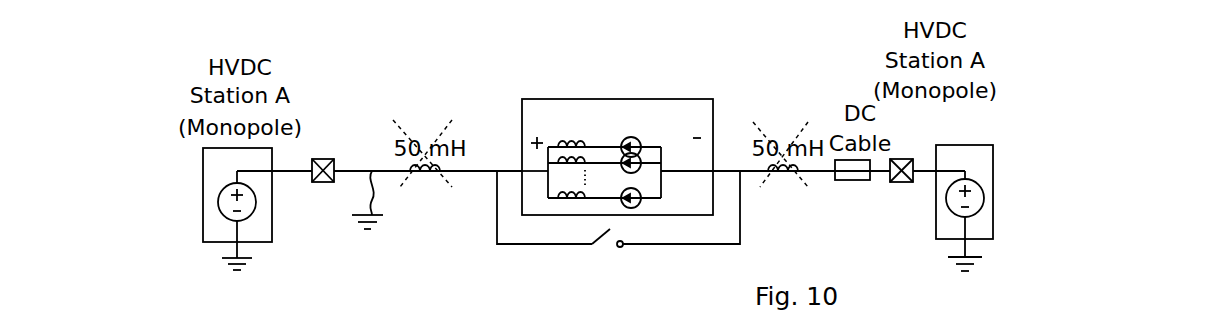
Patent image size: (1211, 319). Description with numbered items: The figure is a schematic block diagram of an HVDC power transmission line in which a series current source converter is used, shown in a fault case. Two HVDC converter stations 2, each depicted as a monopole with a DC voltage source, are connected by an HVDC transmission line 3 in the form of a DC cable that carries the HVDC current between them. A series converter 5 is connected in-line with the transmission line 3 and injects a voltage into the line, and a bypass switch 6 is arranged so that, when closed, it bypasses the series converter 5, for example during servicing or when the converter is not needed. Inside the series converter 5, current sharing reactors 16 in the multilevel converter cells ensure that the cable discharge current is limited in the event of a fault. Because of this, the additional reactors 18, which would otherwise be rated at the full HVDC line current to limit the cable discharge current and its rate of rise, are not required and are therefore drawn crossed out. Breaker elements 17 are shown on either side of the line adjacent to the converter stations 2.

The converter station 2 is at (213, 163).
The HVDC transmission line 3 is at (855, 181).
The series converter 5 is at (624, 152).
The bypass switch 6 is at (612, 247).
The current sharing reactor 16 is at (578, 200).
The circuit breaker 17 is at (323, 158).
The reactor 18 is at (423, 176).